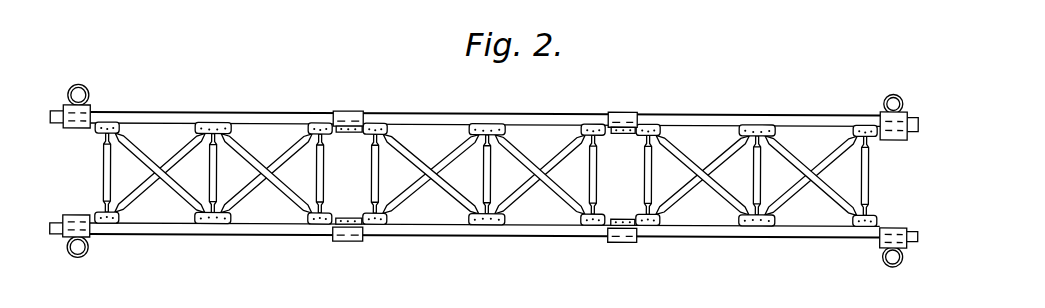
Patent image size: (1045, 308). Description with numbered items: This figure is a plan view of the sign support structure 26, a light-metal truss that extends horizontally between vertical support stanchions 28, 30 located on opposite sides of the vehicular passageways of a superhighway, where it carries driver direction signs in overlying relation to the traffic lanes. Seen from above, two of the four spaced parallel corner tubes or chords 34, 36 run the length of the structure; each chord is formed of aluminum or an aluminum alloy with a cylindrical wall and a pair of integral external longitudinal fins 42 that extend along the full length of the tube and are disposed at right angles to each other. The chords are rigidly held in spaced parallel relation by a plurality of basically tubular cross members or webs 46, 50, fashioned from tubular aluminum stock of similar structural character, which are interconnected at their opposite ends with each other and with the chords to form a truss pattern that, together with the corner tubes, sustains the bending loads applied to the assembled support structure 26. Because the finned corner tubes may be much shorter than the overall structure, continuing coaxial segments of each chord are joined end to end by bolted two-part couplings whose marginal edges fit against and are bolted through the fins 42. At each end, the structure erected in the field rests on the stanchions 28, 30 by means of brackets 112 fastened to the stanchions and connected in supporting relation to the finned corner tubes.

The sign support structure 26 is at (492, 186).
The vertical support stanchion 28 is at (89, 98).
The vertical support stanchion 30 is at (884, 102).
The corner tube or chord 34 is at (311, 236).
The corner tube or chord 36 is at (273, 112).
The external longitudinal fin 42 is at (417, 209).
The cross member or web 46 is at (323, 173).
The cross member or web 50 is at (170, 163).
The bracket 112 is at (91, 108).